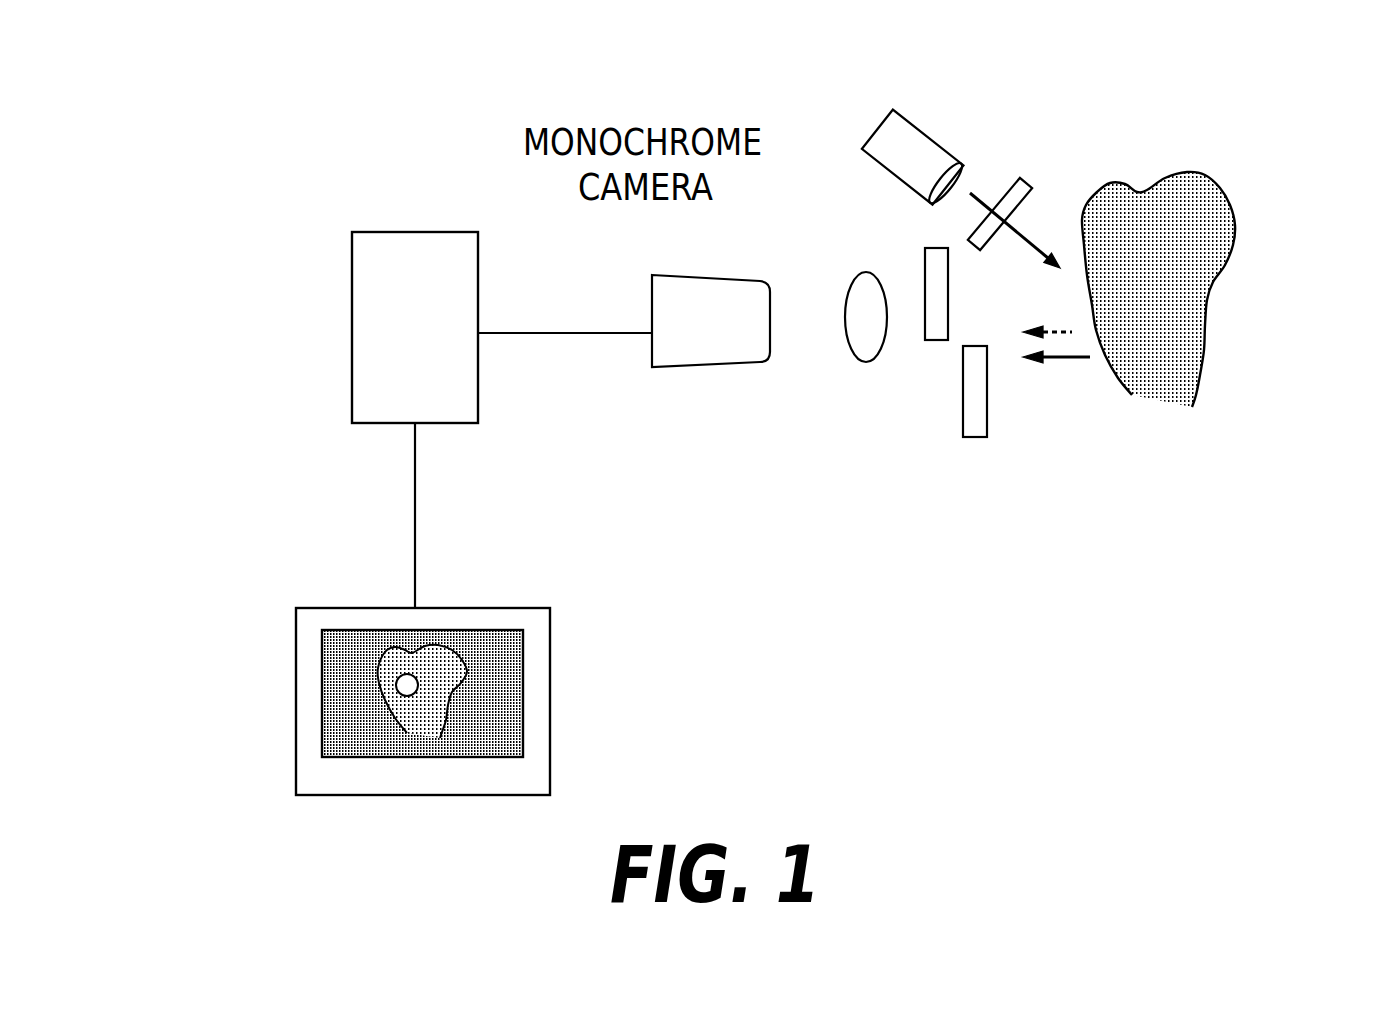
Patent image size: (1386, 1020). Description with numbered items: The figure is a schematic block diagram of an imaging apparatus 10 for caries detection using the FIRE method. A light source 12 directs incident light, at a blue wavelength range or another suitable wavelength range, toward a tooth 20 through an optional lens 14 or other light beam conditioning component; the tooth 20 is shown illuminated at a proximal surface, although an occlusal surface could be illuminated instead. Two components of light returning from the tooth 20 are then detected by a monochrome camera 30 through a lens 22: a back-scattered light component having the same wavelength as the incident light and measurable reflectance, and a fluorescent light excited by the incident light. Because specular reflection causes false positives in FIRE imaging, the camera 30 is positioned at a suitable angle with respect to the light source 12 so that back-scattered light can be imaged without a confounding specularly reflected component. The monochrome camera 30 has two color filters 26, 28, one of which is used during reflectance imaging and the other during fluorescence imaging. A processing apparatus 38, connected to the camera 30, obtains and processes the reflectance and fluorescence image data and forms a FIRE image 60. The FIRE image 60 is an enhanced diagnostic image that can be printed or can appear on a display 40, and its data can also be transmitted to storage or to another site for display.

The imaging apparatus 10 is at (280, 97).
The light source 12 is at (887, 102).
The lens 14 is at (1027, 183).
The tooth 20 is at (1212, 265).
The lens 22 is at (862, 270).
The color filter 26 is at (975, 438).
The color filter 28 is at (935, 341).
The monochrome camera 30 is at (697, 275).
The processing apparatus 38 is at (352, 340).
The display 40 is at (296, 697).
The FIRE image 60 is at (523, 690).